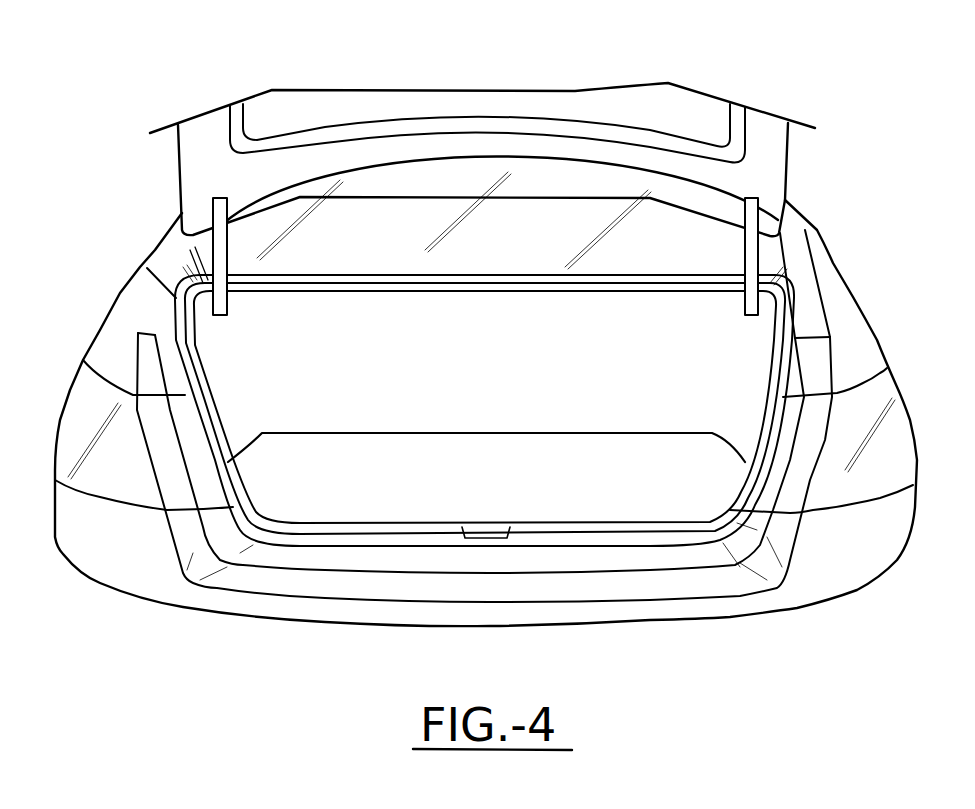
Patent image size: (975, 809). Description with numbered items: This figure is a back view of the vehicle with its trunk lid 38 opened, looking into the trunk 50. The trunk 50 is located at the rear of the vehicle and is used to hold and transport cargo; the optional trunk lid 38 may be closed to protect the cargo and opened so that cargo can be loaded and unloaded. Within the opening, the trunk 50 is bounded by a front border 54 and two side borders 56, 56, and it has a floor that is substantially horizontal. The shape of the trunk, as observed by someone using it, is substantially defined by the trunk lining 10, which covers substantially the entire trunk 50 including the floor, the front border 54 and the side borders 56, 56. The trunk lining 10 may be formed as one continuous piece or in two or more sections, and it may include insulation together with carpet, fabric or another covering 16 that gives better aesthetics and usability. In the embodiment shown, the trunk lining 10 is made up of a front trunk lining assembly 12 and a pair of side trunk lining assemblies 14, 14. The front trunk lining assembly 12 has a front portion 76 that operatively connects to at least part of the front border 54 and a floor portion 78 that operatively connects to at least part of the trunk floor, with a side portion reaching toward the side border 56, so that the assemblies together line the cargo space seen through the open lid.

The trunk lining 10 is at (230, 307).
The front trunk lining assembly 12 is at (333, 432).
The side trunk lining assembly 14 is at (229, 419).
The covering 16 is at (412, 490).
The trunk lid 38 is at (627, 100).
The trunk 50 is at (830, 168).
The front border 54 is at (630, 320).
The side border 56 is at (216, 335).
The front portion 76 is at (618, 348).
The floor portion 78 is at (478, 493).